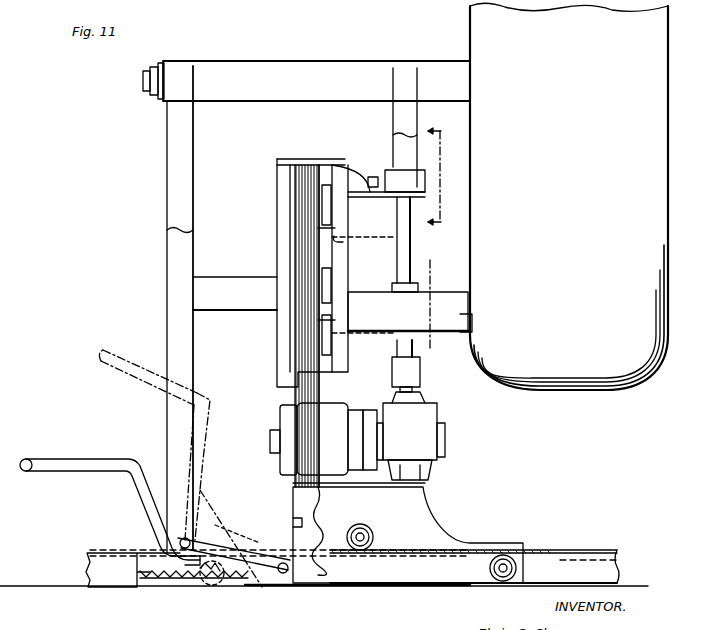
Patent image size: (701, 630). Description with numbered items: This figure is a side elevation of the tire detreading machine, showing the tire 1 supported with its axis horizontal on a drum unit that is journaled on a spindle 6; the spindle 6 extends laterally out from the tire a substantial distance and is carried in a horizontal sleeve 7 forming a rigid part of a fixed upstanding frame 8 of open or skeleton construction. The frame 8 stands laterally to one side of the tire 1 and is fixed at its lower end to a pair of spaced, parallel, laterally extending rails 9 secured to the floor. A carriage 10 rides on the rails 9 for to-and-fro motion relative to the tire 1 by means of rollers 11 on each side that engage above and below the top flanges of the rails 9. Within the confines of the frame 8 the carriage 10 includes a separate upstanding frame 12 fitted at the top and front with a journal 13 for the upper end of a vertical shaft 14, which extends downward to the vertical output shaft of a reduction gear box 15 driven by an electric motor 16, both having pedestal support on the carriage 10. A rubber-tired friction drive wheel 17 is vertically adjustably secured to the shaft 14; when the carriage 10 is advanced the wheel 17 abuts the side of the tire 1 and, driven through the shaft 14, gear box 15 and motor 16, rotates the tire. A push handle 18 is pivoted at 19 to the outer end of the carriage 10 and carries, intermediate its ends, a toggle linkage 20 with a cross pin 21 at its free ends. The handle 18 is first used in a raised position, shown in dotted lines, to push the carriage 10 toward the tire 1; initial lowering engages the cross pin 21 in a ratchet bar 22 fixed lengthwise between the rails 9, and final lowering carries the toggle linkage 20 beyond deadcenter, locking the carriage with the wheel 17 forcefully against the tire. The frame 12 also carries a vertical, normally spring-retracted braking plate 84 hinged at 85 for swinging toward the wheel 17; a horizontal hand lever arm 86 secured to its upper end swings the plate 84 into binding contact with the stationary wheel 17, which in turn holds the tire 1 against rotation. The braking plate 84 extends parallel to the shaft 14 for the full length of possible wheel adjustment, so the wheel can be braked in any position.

The tire 1 is at (598, 391).
The spindle 6 is at (147, 88).
The horizontal sleeve 7 is at (458, 83).
The upstanding frame 8 is at (176, 160).
The rails 9 is at (551, 565).
The carriage 10 is at (402, 535).
The rollers 11 is at (222, 570).
The upstanding frame 12 is at (280, 237).
The journal 13 is at (405, 180).
The vertical shaft 14 is at (400, 235).
The reduction gear box 15 is at (425, 437).
The electric motor 16 is at (332, 425).
The friction drive wheel 17 is at (452, 300).
The push handle 18 is at (92, 466).
The pivot 19 is at (293, 545).
The toggle linkage 20 is at (206, 580).
The cross pin 21 is at (185, 579).
The ratchet bar 22 is at (147, 587).
The braking plate 84 is at (353, 237).
The hinge 85 is at (318, 218).
The hand lever arm 86 is at (368, 173).